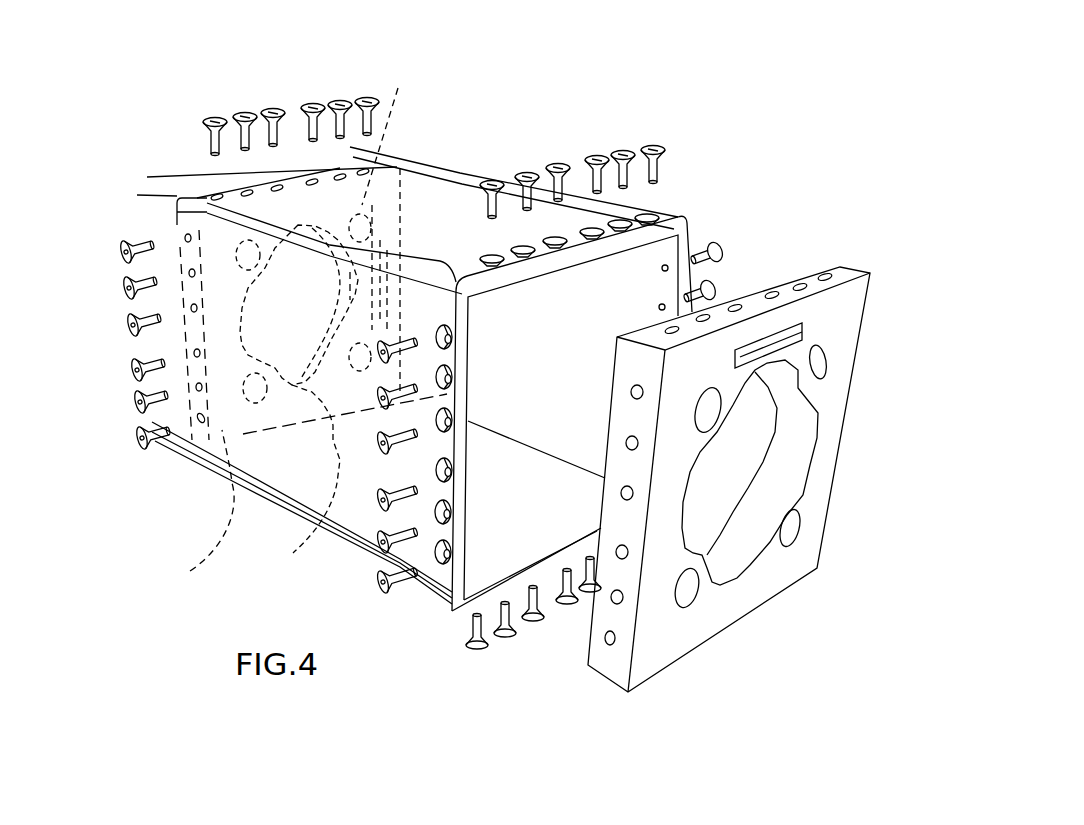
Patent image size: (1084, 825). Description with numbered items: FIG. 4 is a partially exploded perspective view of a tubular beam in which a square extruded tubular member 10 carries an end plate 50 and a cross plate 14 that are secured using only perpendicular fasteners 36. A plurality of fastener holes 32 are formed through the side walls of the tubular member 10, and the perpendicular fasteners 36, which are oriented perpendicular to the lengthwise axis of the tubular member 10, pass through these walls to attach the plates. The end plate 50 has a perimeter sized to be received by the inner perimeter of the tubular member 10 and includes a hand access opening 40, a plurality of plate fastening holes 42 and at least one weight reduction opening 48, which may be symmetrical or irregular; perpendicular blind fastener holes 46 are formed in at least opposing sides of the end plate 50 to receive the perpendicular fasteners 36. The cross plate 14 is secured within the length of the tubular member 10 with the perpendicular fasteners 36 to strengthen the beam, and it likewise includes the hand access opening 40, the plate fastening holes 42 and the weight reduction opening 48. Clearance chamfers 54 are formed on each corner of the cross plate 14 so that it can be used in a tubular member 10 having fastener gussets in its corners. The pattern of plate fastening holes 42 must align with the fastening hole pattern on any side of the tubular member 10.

The tubular member 10 is at (393, 152).
The cross plate 14 is at (290, 430).
The fastener holes 32 is at (648, 216).
The perpendicular fasteners 36 is at (364, 100).
The hand access opening 40 is at (738, 576).
The plate fastening holes 42 is at (815, 352).
The perpendicular blind fastener holes 46 is at (822, 276).
The weight reduction opening 48 is at (822, 362).
The end plate 50 is at (837, 472).
The clearance chamfers 54 is at (196, 512).